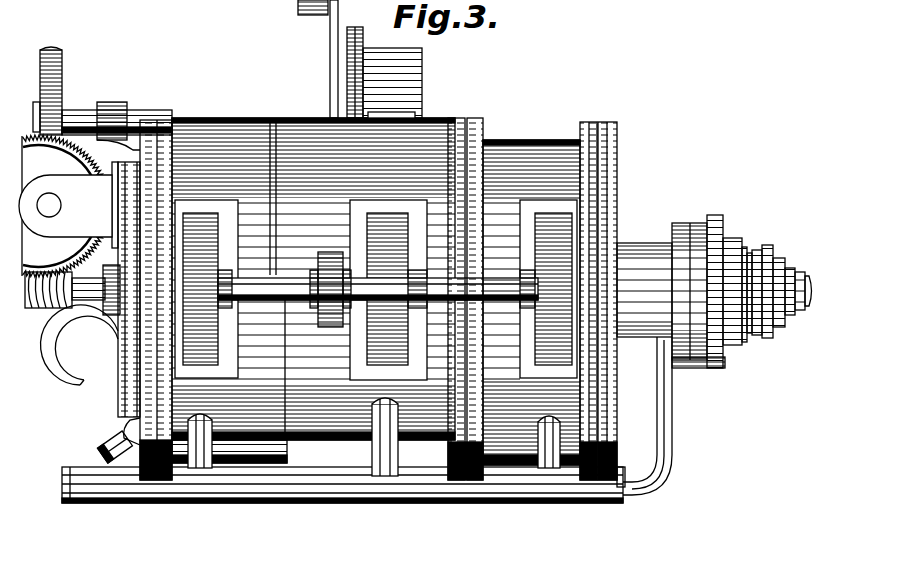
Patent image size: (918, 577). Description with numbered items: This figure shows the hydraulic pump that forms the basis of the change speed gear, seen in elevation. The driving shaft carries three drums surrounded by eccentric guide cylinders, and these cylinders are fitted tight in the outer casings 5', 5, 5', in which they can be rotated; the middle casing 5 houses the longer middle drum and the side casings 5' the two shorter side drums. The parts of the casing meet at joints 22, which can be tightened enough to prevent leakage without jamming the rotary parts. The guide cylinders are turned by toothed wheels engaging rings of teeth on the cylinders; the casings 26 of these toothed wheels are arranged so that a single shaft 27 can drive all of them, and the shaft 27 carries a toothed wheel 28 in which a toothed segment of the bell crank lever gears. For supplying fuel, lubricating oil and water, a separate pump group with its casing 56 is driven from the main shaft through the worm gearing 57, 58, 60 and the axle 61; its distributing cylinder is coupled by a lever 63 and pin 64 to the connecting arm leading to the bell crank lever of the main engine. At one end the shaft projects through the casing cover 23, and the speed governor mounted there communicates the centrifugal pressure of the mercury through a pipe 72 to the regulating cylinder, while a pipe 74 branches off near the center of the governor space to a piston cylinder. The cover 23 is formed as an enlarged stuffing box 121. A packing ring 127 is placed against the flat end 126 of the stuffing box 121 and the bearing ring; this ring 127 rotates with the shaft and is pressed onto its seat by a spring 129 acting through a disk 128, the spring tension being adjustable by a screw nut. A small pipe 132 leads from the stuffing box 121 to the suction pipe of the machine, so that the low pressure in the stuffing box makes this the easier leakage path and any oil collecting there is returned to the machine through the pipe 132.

The outer casing 5 is at (313, 273).
The outer casing 5' is at (531, 284).
The joint 22 is at (158, 125).
The casing cover 23 is at (128, 164).
The casing of the toothed wheel 26 is at (524, 215).
The shaft 27 is at (258, 280).
The toothed wheel 28 is at (333, 328).
The casing 56 is at (412, 84).
The worm gearing 57 is at (42, 311).
The worm gearing 58 is at (74, 140).
The worm gearing 60 is at (52, 56).
The axle 61 is at (82, 300).
The lever 63 is at (332, 46).
The pin 64 is at (304, 12).
The pipe 72 is at (98, 442).
The pipe 74 is at (76, 382).
The stuffing box 121 is at (636, 330).
The flat end of the stuffing box 126 is at (678, 222).
The packing ring 127 is at (698, 368).
The disk 128 is at (716, 215).
The spring 129 is at (733, 237).
The small pipe 132 is at (667, 438).